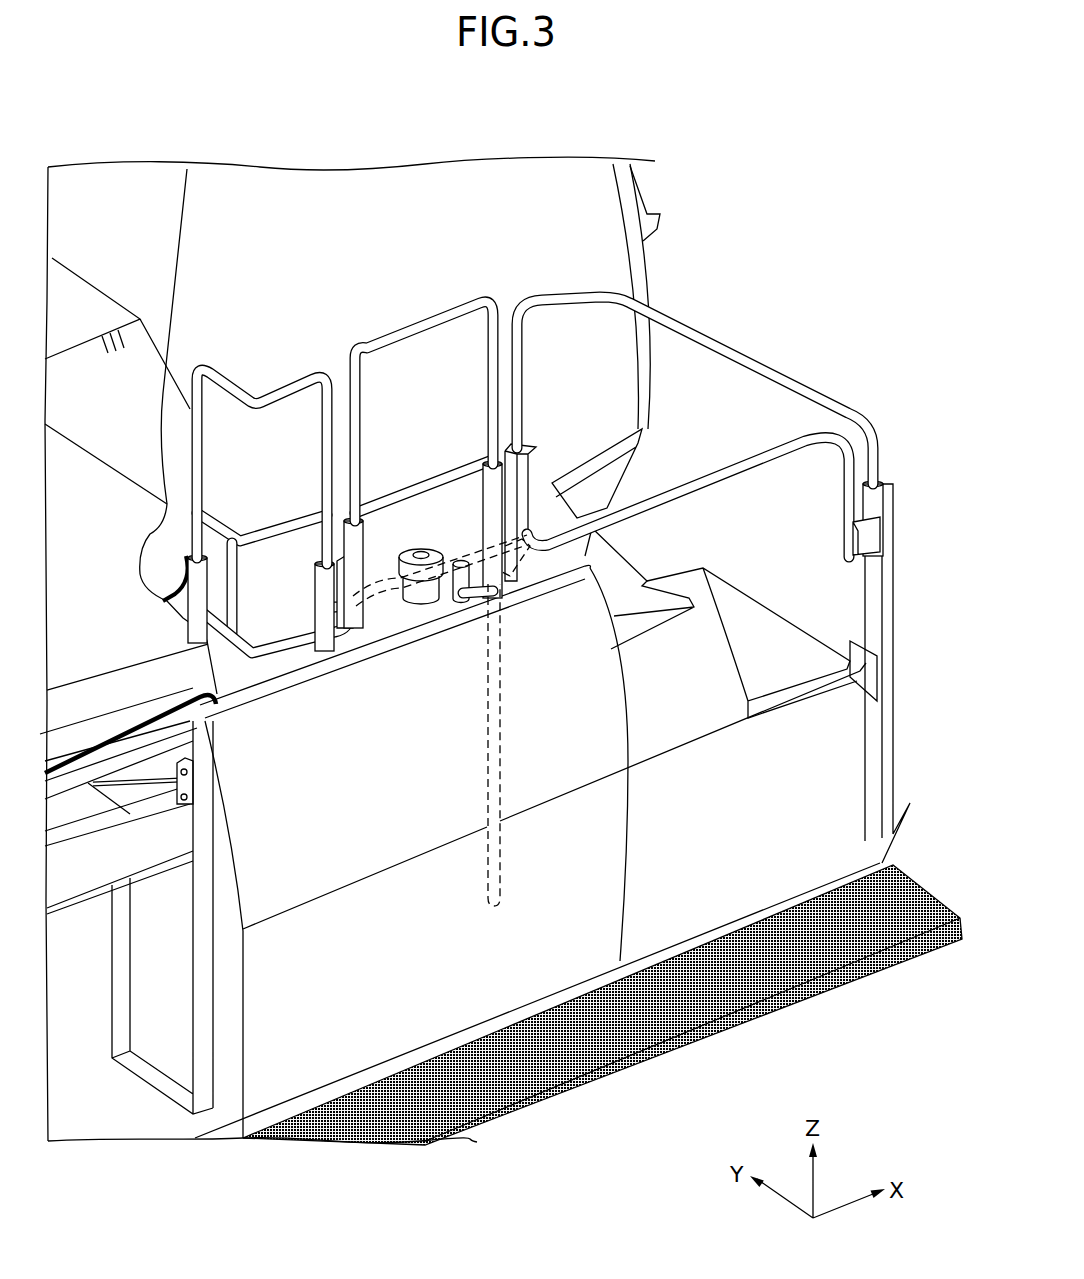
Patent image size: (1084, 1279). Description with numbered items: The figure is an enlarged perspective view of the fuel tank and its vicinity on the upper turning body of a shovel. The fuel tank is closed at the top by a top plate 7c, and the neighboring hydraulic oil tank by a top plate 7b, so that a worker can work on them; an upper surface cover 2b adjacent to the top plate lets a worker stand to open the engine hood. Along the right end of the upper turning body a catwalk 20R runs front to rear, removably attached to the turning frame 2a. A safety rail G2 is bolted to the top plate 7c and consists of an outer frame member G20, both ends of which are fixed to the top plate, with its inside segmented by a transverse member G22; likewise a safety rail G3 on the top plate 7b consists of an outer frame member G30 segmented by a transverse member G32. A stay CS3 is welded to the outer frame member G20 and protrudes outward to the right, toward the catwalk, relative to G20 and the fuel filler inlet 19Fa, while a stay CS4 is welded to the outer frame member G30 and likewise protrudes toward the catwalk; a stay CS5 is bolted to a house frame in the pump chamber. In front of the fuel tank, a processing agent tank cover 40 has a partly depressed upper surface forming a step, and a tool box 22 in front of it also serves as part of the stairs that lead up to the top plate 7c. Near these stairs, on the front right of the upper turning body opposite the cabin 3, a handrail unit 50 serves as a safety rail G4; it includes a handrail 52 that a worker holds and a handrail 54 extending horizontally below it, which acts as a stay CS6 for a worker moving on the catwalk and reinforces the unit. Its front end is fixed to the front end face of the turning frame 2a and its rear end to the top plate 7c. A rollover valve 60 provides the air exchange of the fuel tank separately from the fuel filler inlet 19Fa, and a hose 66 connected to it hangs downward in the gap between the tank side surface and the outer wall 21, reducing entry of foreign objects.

The cabin 3 is at (590, 232).
The turning frame 2a is at (912, 822).
The upper surface cover 2b is at (130, 457).
The top plate 7b is at (240, 682).
The top plate 7c is at (380, 592).
The fuel filler inlet 19Fa is at (410, 570).
The catwalk 20R is at (912, 906).
The outer wall (tank side cover) 21 is at (345, 855).
The tool box 22 is at (735, 612).
The processing agent tank cover 40 is at (625, 565).
The handrail unit 50 is at (694, 415).
The handrail 52 is at (666, 318).
The handrail 54 is at (750, 457).
The rollover valve 60 is at (458, 562).
The hose 66 is at (505, 762).
The safety rail G2 is at (423, 431).
The outer frame member G20 is at (395, 345).
The transverse member G22 is at (432, 452).
The safety rail G3 is at (274, 519).
The outer frame member G30 is at (292, 327).
The transverse member G32 is at (253, 530).
The safety rail G4 is at (694, 415).
The stay CS3 is at (527, 572).
The stay CS4 is at (320, 643).
The stay CS5 is at (117, 810).
The stay CS6 is at (729, 465).